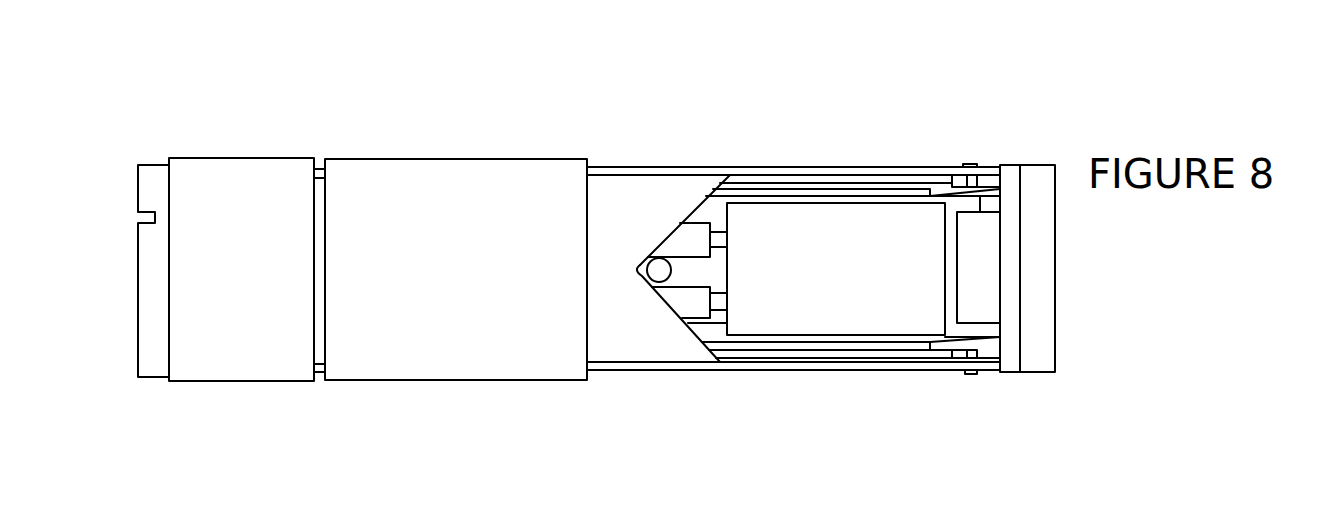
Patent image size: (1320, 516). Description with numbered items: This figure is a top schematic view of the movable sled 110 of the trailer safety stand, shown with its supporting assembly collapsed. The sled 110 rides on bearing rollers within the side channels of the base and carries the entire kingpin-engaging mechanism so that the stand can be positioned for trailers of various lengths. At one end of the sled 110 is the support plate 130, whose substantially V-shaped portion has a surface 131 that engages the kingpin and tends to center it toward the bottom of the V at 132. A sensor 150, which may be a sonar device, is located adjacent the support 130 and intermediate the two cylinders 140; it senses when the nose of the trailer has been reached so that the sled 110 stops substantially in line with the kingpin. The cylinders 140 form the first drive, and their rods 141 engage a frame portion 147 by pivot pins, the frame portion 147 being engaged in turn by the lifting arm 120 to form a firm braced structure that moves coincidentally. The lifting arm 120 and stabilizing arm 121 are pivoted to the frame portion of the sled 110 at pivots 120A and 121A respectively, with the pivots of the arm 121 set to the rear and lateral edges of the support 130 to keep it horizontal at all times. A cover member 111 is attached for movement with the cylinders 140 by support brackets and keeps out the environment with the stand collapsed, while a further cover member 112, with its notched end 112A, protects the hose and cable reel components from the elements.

The sled 110 is at (537, 123).
The cover member 111 is at (423, 173).
The cover member 112 is at (222, 175).
The end cap notch 112A is at (140, 217).
The lifting arm 120 is at (968, 333).
The pivot 120A is at (970, 374).
The stabilizing arm 121 is at (883, 352).
The pivot 121A is at (943, 358).
The support plate 130 is at (685, 187).
The surface 131 is at (722, 185).
The bottom of the V 132 is at (636, 268).
The cylinders 140 is at (723, 237).
The rods 141 is at (722, 301).
The frame portion 147 is at (885, 218).
The sensor 150 is at (652, 277).